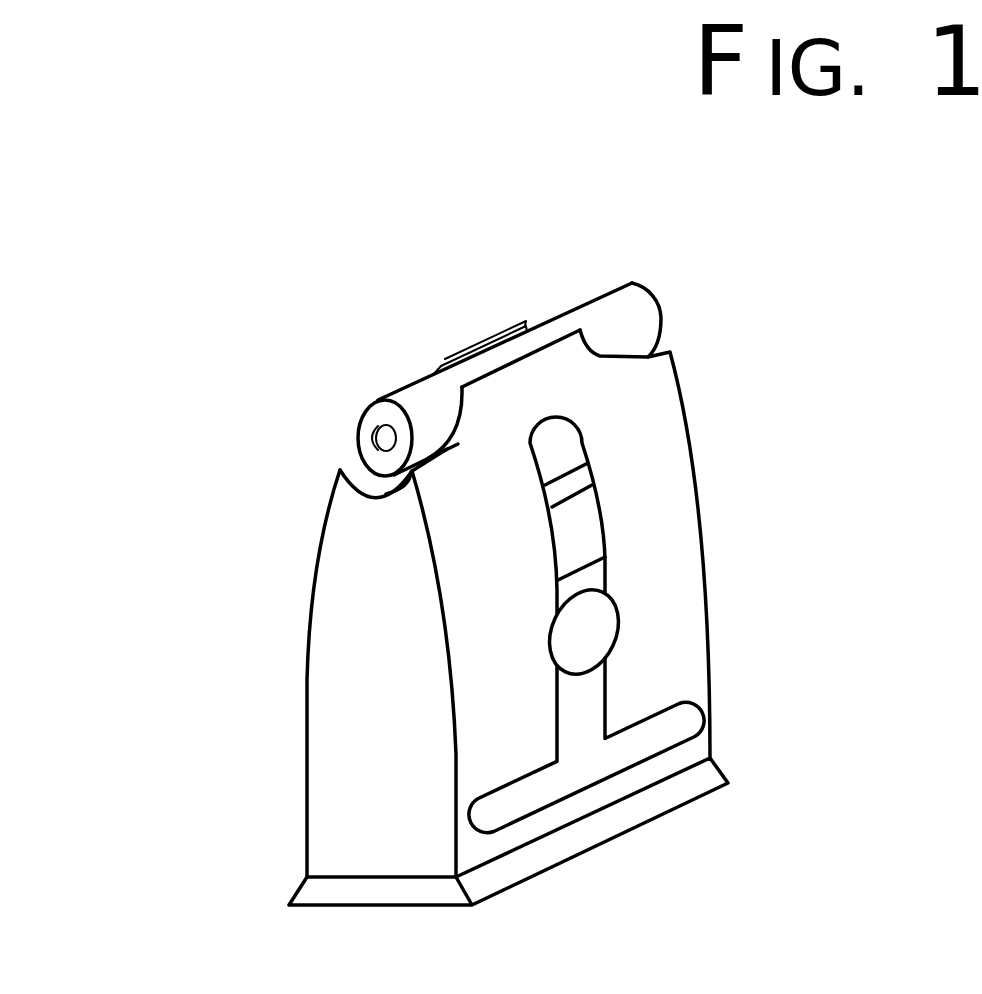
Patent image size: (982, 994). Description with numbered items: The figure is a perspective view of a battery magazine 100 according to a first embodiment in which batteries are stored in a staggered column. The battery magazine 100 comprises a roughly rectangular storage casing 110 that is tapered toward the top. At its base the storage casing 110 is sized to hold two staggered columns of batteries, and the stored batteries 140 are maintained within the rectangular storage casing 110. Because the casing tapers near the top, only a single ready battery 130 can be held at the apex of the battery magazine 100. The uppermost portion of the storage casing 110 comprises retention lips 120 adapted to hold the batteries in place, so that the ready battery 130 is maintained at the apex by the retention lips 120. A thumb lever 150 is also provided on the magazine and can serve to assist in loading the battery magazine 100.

The battery magazine 100 is at (180, 410).
The storage casing 110 is at (357, 647).
The retention lips 120 is at (505, 385).
The ready battery 130 is at (617, 305).
The stored batteries 140 is at (580, 513).
The thumb lever 150 is at (607, 627).